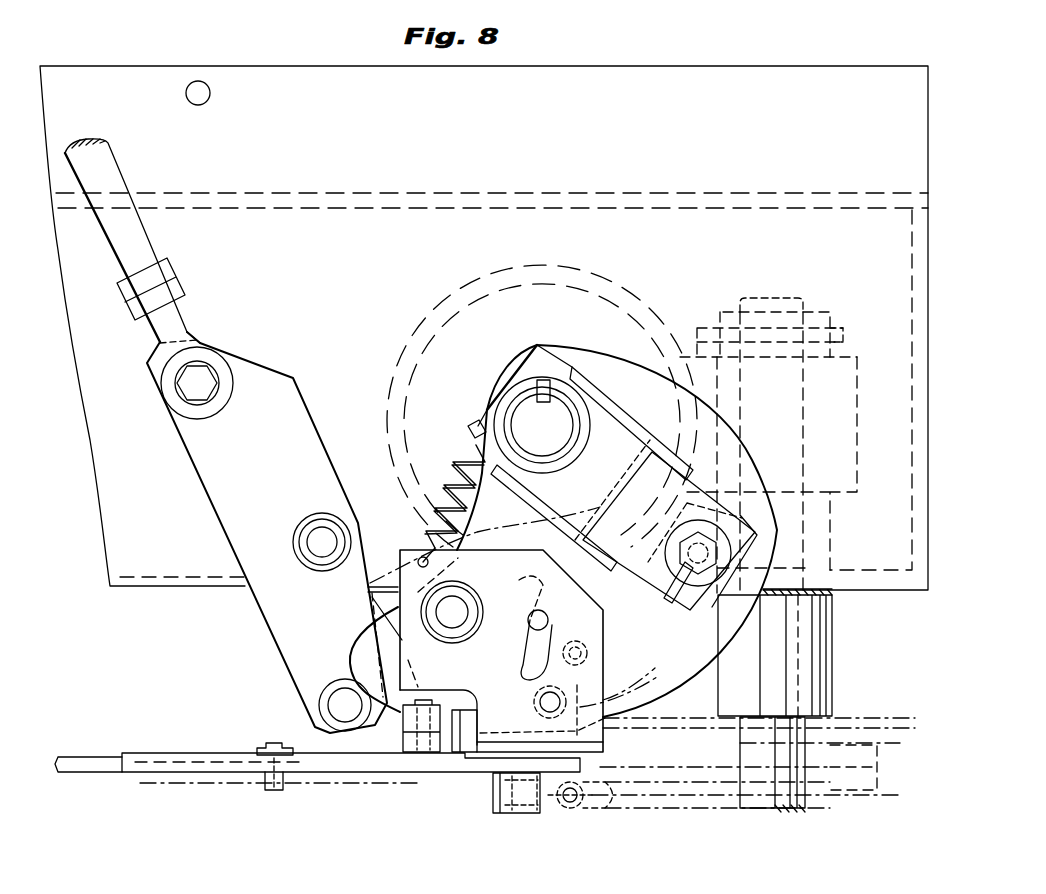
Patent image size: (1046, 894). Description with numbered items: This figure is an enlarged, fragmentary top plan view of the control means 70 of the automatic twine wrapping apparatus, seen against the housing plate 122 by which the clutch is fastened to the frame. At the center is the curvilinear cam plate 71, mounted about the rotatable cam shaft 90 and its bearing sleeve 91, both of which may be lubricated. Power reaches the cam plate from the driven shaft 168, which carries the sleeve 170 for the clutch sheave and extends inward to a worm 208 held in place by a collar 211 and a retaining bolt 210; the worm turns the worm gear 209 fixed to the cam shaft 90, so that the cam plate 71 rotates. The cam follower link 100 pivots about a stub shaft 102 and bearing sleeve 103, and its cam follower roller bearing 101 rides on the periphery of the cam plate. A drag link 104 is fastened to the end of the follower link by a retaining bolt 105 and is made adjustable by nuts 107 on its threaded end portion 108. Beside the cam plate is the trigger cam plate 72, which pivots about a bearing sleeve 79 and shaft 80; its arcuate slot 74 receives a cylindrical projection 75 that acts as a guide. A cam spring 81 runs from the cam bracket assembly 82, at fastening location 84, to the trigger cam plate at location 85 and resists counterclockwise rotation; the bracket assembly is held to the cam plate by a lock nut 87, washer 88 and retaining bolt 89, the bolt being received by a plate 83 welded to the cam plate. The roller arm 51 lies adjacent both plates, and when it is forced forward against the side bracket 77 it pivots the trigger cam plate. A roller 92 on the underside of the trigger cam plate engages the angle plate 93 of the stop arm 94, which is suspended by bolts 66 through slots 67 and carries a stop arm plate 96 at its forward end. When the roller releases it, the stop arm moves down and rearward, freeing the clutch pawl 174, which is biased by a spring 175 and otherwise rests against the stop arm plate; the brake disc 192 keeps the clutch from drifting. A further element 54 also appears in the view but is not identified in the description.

The housing plate 122 is at (698, 66).
The control means 70 is at (612, 238).
The drag link 104 is at (124, 174).
The nuts 107 is at (180, 264).
The threaded end portion 108 is at (186, 326).
The retaining bolt 105 is at (178, 387).
The cam follower link 100 is at (187, 454).
The bearing sleeve 103 is at (296, 534).
The stub shaft 102 is at (306, 547).
The cam follower roller bearing 101 is at (334, 682).
The worm gear 209 is at (410, 340).
The cam plate 71 is at (632, 356).
The rotatable cam shaft 90 is at (510, 380).
The cam bracket assembly 82 is at (536, 346).
The bearing sleeve 91 is at (550, 388).
The spring fastening location 84 is at (476, 424).
The cam spring 81 is at (453, 458).
The spring fastening location 85 is at (421, 556).
The trigger cam plate 72 is at (378, 633).
The bearing sleeve 79 is at (462, 571).
The shaft 80 is at (437, 608).
The arcuate slot 74 is at (522, 648).
The cylindrical projection 75 is at (548, 621).
The roller 92 is at (534, 702).
The side bracket 77 is at (470, 726).
The block 54 is at (403, 745).
The roller arm 51 is at (199, 753).
The stop arm 94 is at (112, 757).
The slots 67 is at (225, 760).
The bolts 66 is at (277, 790).
The stop arm plate 96 is at (492, 799).
The pawl 174 is at (560, 808).
The spring 175 is at (600, 810).
The plate 83 is at (690, 616).
The washer 88 is at (690, 510).
The lock nut 87 is at (688, 554).
The retaining bolt 89 is at (682, 580).
The angle plate 93 is at (632, 690).
The driven shaft 168 is at (780, 810).
The retaining bolt 210 is at (703, 320).
The collar 211 is at (830, 313).
The worm 208 is at (843, 388).
The sleeve 170 is at (832, 677).
The brake disc 192 is at (880, 743).